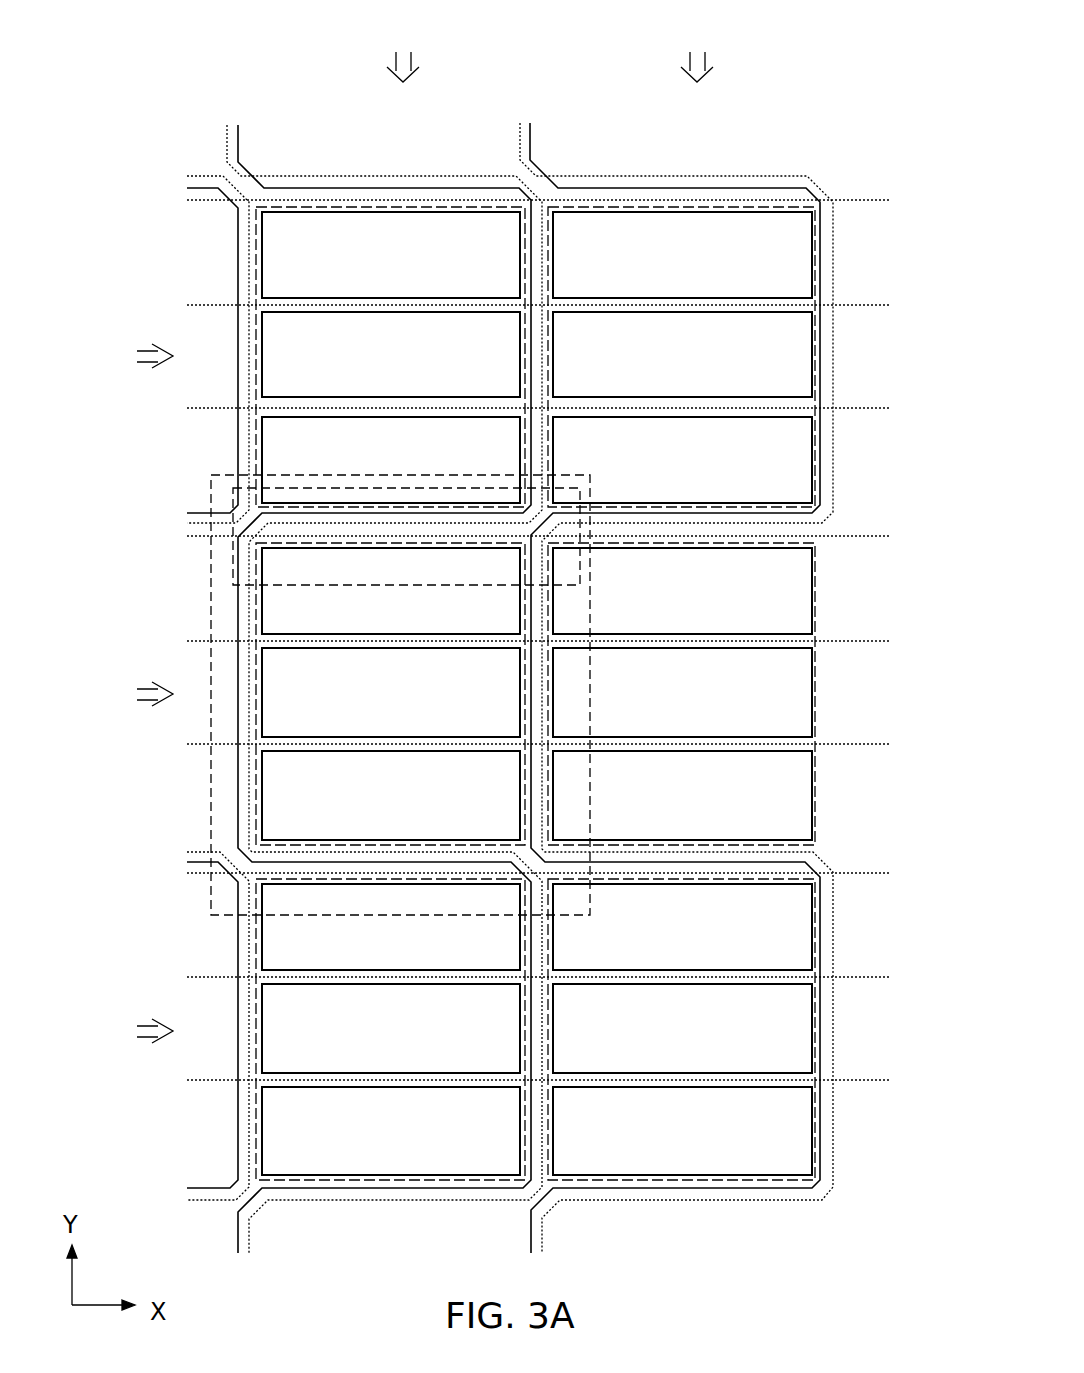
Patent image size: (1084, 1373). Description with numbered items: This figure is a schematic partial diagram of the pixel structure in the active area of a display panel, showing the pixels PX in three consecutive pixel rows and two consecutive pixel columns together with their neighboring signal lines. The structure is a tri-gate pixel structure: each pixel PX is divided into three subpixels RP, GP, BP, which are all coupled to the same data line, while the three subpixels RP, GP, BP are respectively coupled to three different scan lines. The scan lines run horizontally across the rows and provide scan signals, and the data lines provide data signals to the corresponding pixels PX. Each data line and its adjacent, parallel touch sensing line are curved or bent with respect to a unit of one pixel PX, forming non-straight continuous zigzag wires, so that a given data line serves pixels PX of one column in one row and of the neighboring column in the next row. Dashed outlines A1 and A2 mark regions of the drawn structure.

The pixel PX is at (431, 206).
The subpixel RP is at (410, 268).
The subpixel GP is at (410, 368).
The subpixel BP is at (410, 458).
The first region A1 is at (209, 495).
The second region A2 is at (232, 568).